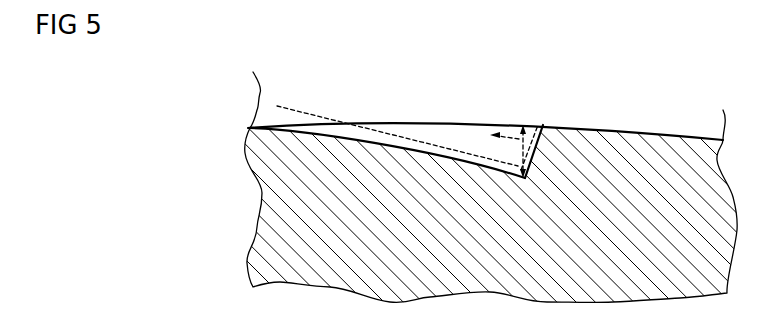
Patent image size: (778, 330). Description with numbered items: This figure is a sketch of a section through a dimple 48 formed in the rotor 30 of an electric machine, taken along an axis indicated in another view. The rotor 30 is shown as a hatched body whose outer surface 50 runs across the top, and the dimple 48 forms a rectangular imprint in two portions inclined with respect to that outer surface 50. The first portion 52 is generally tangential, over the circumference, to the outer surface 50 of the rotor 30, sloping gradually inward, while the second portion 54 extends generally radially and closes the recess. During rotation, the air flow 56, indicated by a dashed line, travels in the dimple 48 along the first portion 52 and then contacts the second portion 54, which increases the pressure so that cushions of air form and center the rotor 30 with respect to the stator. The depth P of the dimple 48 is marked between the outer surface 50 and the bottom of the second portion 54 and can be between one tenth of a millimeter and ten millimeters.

The rotor 30 is at (208, 109).
The dimple 48 is at (450, 137).
The outer surface 50 is at (672, 138).
The first portion 52 is at (393, 150).
The second portion 54 is at (532, 140).
The air flow 56 is at (300, 111).
The depth P is at (508, 151).